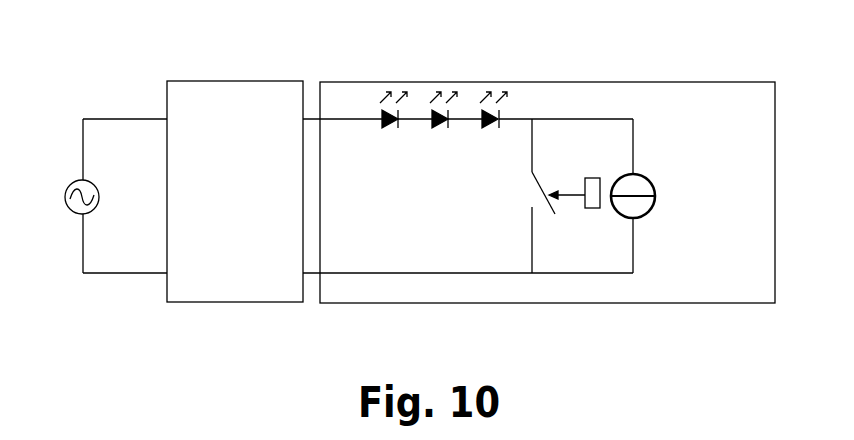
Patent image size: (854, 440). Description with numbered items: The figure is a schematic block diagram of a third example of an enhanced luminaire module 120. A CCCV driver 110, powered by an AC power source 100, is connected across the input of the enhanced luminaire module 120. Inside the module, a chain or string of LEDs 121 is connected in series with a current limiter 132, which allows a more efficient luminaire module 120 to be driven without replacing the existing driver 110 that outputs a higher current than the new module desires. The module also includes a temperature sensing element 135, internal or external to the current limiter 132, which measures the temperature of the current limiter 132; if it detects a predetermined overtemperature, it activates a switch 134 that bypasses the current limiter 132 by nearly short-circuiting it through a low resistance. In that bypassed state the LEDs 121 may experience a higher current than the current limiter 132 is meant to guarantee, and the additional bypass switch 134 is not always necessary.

The AC power source 100 is at (67, 180).
The CCCV driver 110 is at (252, 80).
The enhanced luminaire module 120 is at (632, 83).
The LEDs 121 is at (435, 138).
The current limiter 132 is at (653, 180).
The switch 134 is at (553, 187).
The temperature sensing element 135 is at (599, 175).